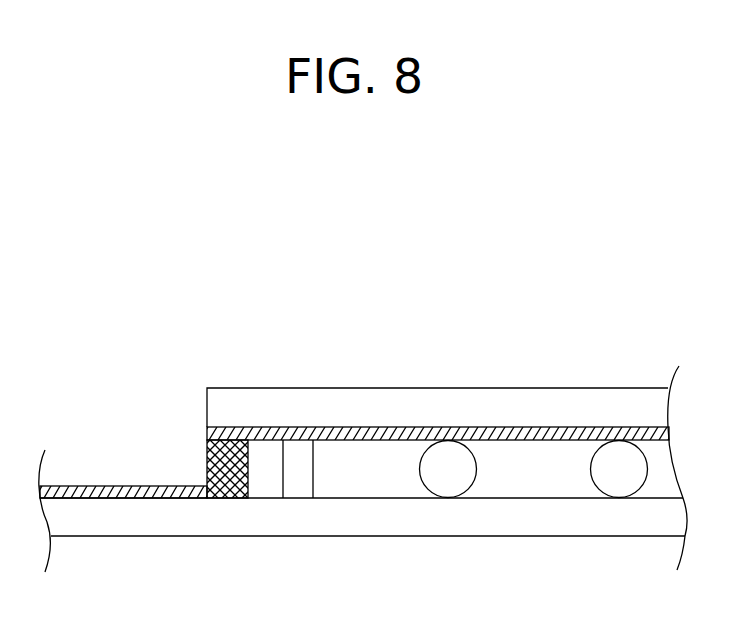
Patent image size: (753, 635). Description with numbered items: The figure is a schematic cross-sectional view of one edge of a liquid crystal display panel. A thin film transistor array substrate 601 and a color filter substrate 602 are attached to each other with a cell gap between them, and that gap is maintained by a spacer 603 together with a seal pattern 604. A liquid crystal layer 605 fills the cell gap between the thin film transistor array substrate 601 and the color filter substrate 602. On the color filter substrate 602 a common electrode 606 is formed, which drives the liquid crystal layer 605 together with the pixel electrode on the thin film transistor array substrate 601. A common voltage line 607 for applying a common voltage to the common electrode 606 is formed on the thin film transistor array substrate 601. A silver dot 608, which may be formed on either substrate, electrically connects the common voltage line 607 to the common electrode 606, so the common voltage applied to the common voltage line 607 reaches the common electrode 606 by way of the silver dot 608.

The thin film transistor array substrate 601 is at (552, 520).
The color filter substrate 602 is at (254, 408).
The spacer 603 is at (617, 478).
The seal pattern 604 is at (301, 480).
The liquid crystal layer 605 is at (520, 472).
The common electrode 606 is at (207, 431).
The common voltage line 607 is at (88, 487).
The silver (Ag) dot 608 is at (207, 458).